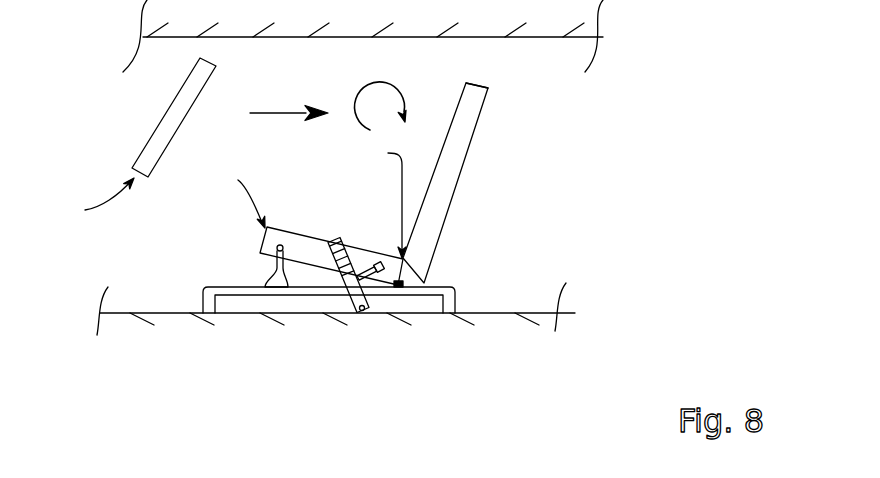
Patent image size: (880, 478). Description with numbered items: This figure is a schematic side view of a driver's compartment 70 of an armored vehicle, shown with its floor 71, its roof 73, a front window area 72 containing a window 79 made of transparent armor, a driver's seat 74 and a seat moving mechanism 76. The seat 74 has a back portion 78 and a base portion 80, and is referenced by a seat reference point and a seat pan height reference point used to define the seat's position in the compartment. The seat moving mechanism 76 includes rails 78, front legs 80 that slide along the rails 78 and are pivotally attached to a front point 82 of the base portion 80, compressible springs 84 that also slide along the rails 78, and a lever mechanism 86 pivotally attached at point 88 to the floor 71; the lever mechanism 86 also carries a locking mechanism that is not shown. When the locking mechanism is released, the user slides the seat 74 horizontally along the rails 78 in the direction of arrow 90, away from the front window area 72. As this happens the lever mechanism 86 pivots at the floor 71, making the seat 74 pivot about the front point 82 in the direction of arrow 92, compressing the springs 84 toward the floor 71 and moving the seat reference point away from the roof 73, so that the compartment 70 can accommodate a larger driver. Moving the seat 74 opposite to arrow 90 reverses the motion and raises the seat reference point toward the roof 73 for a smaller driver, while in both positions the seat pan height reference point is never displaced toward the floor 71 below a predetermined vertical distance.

The driver's compartment 70 is at (381, 185).
The floor 71 is at (147, 308).
The front window area 72 is at (95, 200).
The roof 73 is at (353, 37).
The driver's seat 74 is at (482, 77).
The seat moving mechanism 76 is at (467, 302).
The back portion 78 is at (445, 175).
The window 79 is at (153, 131).
The base portion 80 is at (305, 245).
The front point 82 is at (265, 235).
The compressible springs 84 is at (405, 280).
The lever mechanism 86 is at (342, 243).
The pivot point 88 is at (363, 313).
The arrow 90 is at (287, 110).
The arrow 92 is at (382, 92).